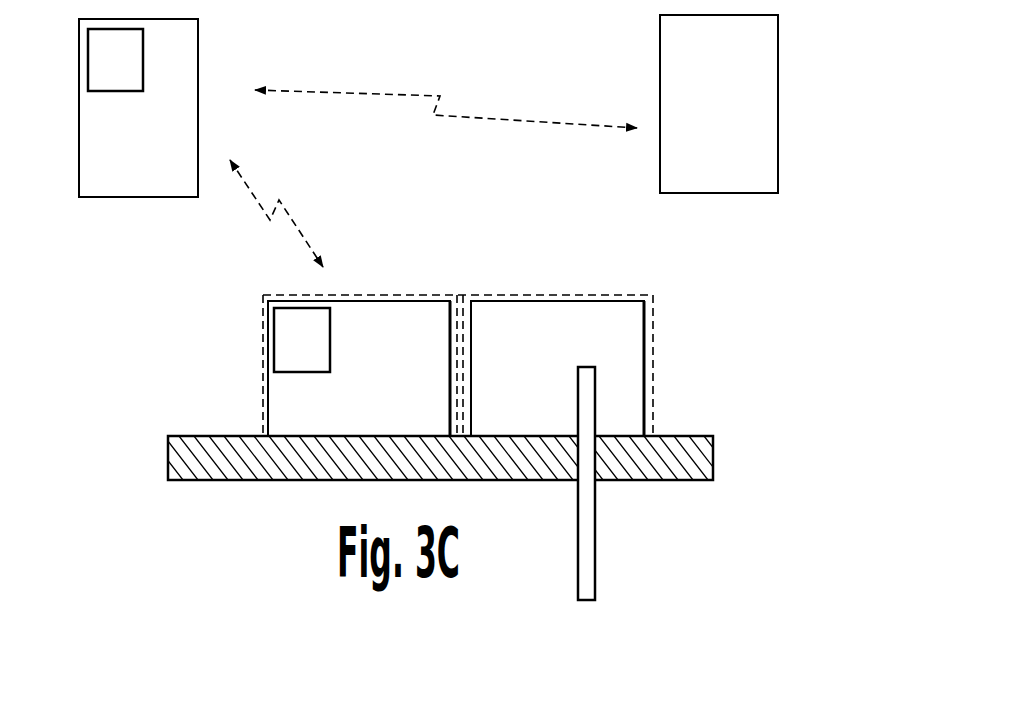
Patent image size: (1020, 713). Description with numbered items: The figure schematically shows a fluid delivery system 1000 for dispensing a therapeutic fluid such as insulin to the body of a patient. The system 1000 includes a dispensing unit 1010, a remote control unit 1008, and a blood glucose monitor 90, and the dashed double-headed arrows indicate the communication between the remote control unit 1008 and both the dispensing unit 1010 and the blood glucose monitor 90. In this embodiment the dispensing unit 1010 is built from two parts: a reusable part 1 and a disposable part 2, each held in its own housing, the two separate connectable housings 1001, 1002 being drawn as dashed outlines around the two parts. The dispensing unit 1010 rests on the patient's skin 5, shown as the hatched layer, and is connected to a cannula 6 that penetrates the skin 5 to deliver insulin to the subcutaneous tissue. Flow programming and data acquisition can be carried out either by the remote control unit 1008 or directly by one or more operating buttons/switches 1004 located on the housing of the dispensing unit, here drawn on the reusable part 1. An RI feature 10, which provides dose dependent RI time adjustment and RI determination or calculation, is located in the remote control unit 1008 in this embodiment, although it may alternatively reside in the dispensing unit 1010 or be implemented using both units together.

The reusable part 1 is at (372, 278).
The disposable part 2 is at (595, 270).
The patient's skin 5 is at (703, 460).
The cannula 6 is at (570, 547).
The RI feature 10 is at (113, 60).
The blood glucose monitor 90 is at (758, 210).
The system 1000 is at (155, 261).
The housing 1001 is at (263, 380).
The housing 1002 is at (658, 347).
The operating buttons/switches 1004 is at (300, 340).
The remote control unit 1008 is at (207, 55).
The dispensing unit 1010 is at (447, 250).